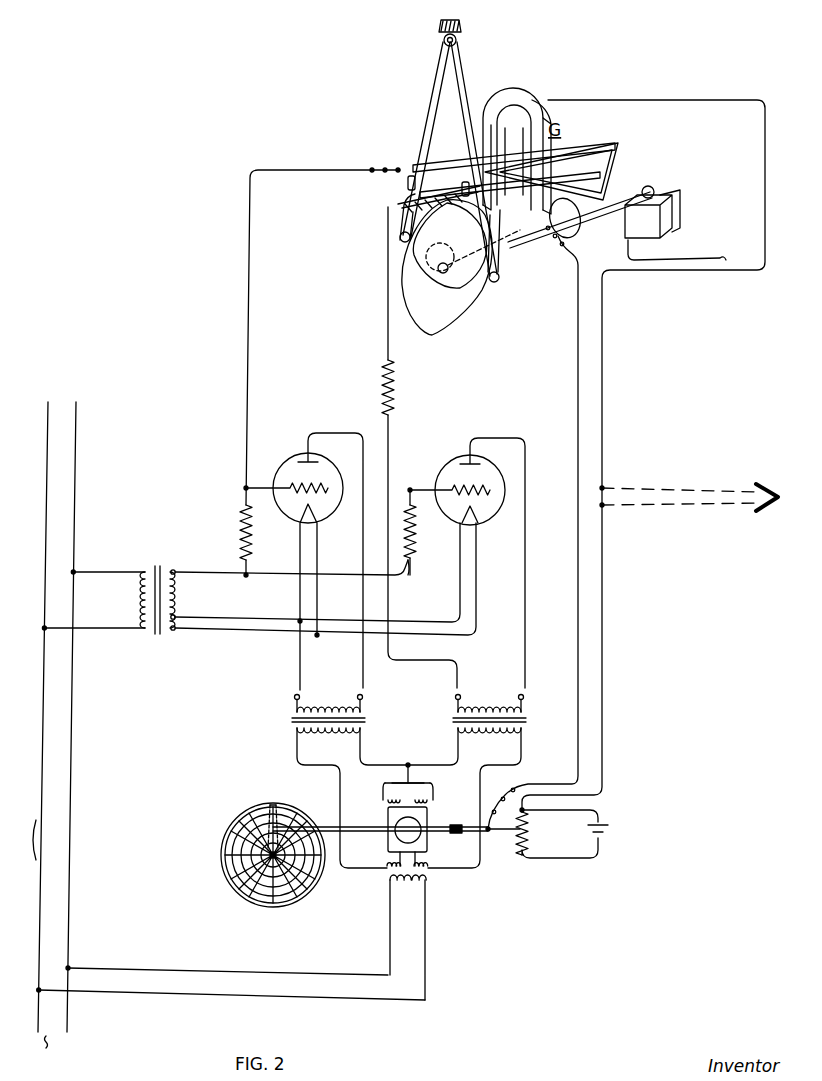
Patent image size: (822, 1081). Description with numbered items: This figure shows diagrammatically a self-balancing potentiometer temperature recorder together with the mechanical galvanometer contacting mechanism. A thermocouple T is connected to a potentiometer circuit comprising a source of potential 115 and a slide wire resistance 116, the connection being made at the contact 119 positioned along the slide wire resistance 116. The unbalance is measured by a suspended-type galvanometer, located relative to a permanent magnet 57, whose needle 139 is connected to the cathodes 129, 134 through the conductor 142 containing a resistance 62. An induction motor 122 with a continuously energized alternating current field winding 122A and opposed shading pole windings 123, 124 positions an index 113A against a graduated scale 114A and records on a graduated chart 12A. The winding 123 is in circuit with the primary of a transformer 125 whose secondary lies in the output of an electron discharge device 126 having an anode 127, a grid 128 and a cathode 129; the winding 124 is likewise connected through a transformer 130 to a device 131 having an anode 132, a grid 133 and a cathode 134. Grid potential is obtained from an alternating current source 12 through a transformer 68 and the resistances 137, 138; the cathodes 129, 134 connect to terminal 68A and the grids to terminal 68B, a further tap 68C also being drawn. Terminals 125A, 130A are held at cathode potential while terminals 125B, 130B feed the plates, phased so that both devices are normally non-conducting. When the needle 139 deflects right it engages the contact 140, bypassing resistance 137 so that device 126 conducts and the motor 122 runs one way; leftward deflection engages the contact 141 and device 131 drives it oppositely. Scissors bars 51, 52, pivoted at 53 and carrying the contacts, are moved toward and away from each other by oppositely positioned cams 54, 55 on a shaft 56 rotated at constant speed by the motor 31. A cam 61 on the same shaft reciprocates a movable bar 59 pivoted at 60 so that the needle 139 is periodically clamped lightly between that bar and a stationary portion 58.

The alternating current source 12 is at (54, 725).
The chart 12A is at (224, 850).
The motor 31 is at (681, 212).
The scissors bar 51 is at (431, 74).
The scissors bar 52 is at (463, 78).
The pivot 53 is at (458, 41).
The cam 54 is at (440, 332).
The cam 55 is at (462, 305).
The shaft 56 is at (582, 230).
The permanent magnet 57 is at (516, 112).
The stationary portion 58 is at (428, 192).
The movable bar 59 is at (448, 164).
The pivot 60 is at (620, 145).
The cam 61 is at (570, 250).
The resistance 62 is at (384, 379).
The transformer 68 is at (154, 589).
The terminal 68A is at (180, 618).
The terminal 68B is at (176, 572).
The transformer tap 68C is at (176, 635).
The index 113A is at (330, 824).
The scale 114A is at (270, 805).
The source of potential 115 is at (609, 829).
The slide wire resistance 116 is at (526, 823).
The contact 119 is at (512, 852).
The induction motor 122 is at (412, 891).
The alternating current field winding 122A is at (410, 886).
The shading pole winding 123 is at (430, 872).
The shading pole winding 124 is at (386, 872).
The transformer 125 is at (495, 784).
The secondary terminal 125A is at (456, 698).
The secondary terminal 125B is at (522, 697).
The electron discharge device 126 is at (466, 554).
The anode 127 is at (474, 460).
The grid 128 is at (477, 500).
The cathode 129 is at (426, 532).
The transformer 130 is at (375, 784).
The secondary terminal 130A is at (295, 696).
The secondary terminal 130B is at (362, 696).
The electron discharge device 131 is at (303, 548).
The anode 132 is at (306, 458).
The grid 133 is at (313, 495).
The cathode 134 is at (296, 510).
The resistance 137 is at (410, 565).
The resistance 138 is at (240, 522).
The galvanometer needle 139 is at (528, 178).
The contact 140 is at (466, 245).
The contact 141 is at (410, 168).
The conductor 142 is at (386, 320).
The thermocouple T is at (690, 508).